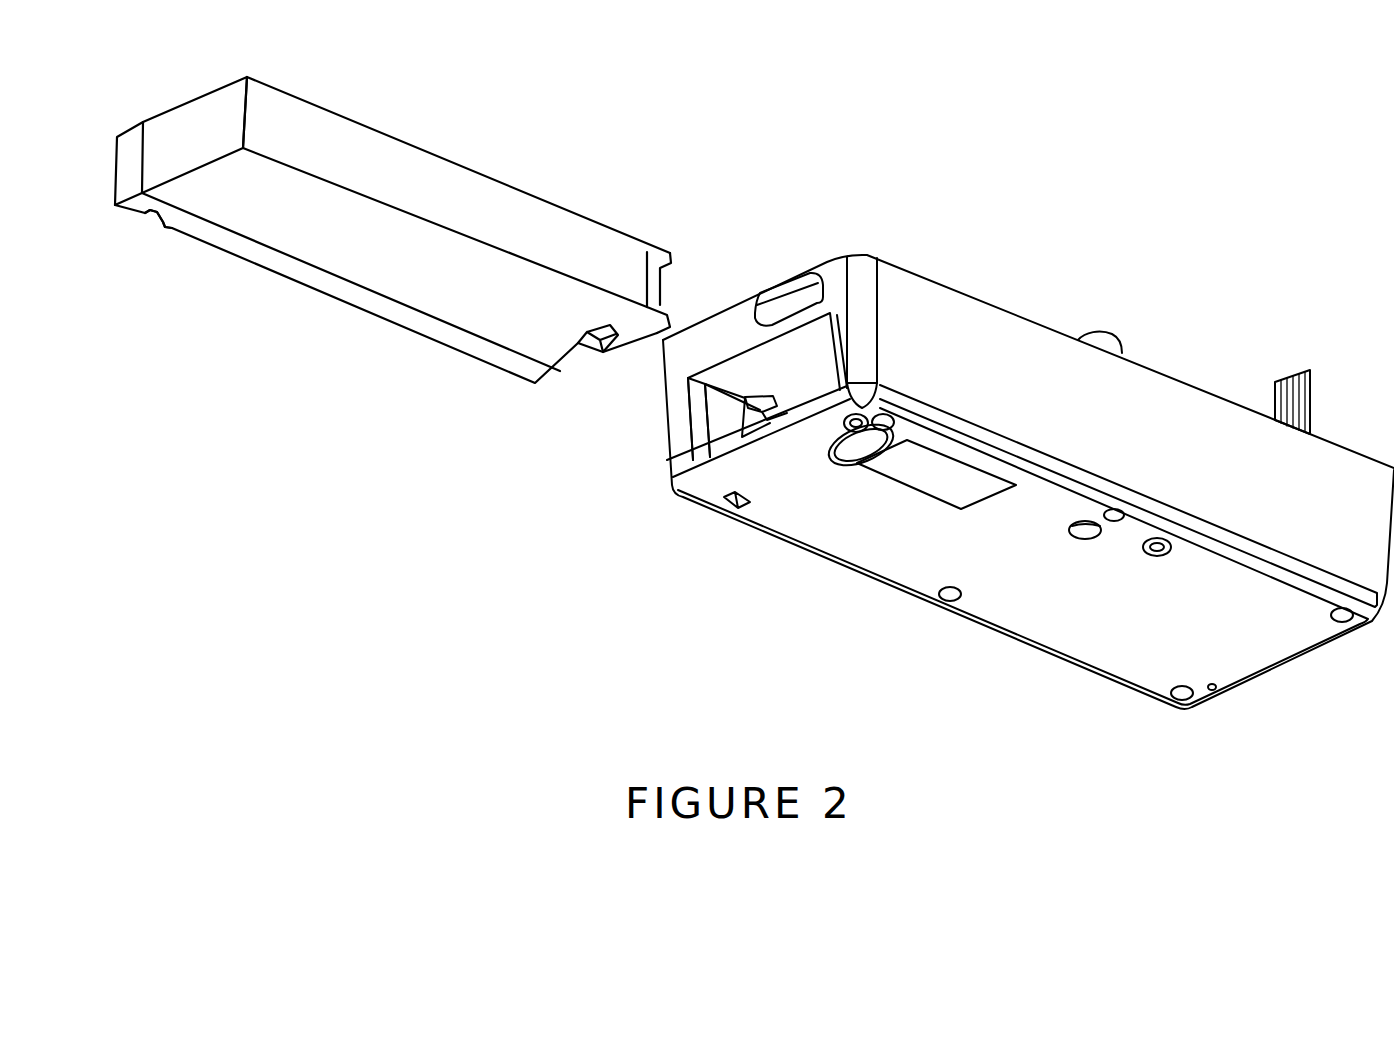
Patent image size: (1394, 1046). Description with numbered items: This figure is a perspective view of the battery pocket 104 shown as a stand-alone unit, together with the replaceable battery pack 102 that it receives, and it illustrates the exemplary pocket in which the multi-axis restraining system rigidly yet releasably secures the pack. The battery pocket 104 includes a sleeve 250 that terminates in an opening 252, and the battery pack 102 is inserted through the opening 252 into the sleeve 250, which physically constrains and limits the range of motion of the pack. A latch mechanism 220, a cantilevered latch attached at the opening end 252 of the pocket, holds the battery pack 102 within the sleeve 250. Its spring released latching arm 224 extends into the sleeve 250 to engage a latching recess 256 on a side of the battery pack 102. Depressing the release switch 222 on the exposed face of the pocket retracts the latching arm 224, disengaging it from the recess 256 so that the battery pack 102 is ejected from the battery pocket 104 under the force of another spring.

The battery pack 102 is at (373, 163).
The battery pocket 104 is at (952, 349).
The latch mechanism 220 is at (764, 264).
The release switch 222 is at (817, 282).
The latching arm 224 is at (760, 400).
The sleeve 250 is at (818, 382).
The opening 252 is at (717, 410).
The latching recess 256 is at (150, 222).